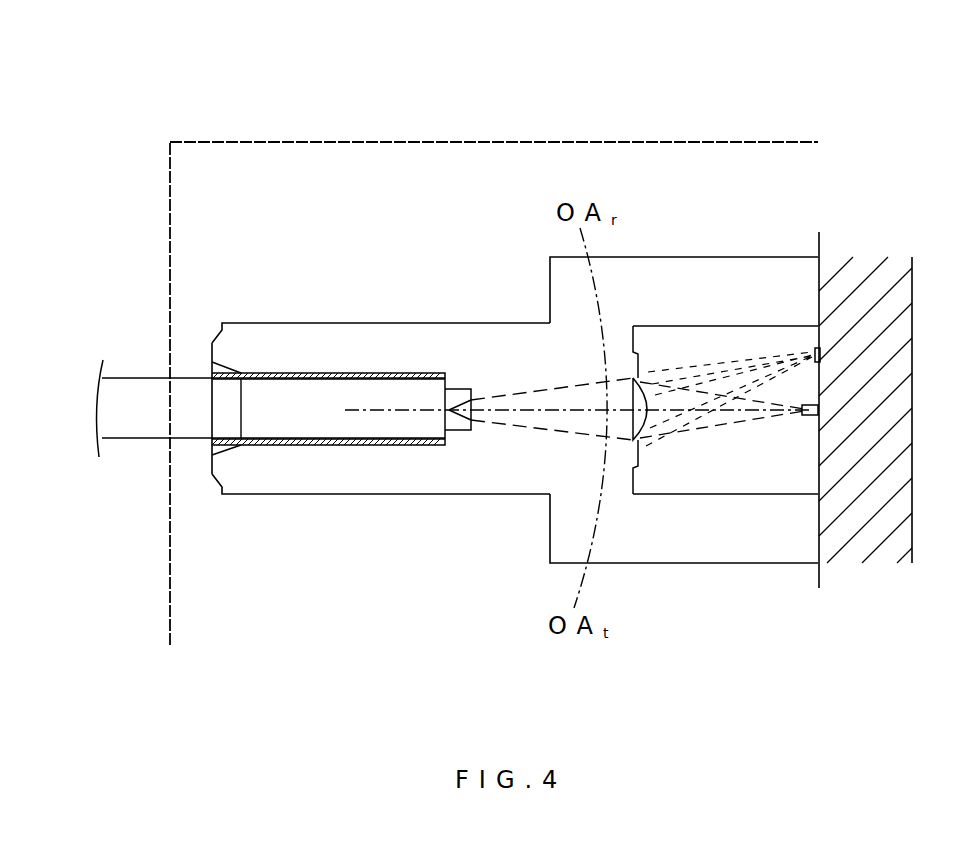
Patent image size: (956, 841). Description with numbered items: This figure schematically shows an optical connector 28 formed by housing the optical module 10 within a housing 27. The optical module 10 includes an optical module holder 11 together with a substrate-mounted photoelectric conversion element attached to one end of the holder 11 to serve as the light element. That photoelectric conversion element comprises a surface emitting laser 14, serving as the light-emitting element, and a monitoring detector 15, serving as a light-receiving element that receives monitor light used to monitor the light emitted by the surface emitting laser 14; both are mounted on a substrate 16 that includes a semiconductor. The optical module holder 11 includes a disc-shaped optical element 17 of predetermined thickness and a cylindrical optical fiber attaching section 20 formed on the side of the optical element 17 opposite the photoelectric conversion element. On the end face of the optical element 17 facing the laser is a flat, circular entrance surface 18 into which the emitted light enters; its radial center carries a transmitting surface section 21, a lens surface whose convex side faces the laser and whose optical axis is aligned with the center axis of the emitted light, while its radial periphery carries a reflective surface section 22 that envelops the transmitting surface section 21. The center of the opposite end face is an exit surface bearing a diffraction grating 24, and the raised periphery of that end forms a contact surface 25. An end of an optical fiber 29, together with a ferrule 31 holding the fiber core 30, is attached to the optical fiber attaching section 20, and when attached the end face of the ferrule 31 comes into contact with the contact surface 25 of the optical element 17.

The optical connector 28 is at (120, 132).
The housing 27 is at (267, 142).
The optical module 10 is at (515, 366).
The optical fiber attaching section 20 is at (318, 323).
The optical module holder 11 is at (465, 323).
The fiber core 30 is at (145, 397).
The optical fiber 29 is at (149, 438).
The ferrule 31 is at (313, 447).
The contact surface 25 is at (420, 447).
The diffraction grating 24 is at (461, 430).
The optical element 17 is at (537, 440).
The reflective surface section 22 is at (645, 455).
The transmitting surface section 21 is at (648, 392).
The entrance surface 18 is at (638, 483).
The surface emitting laser 14 is at (809, 418).
The monitoring detector 15 is at (815, 355).
The substrate 16 is at (818, 248).